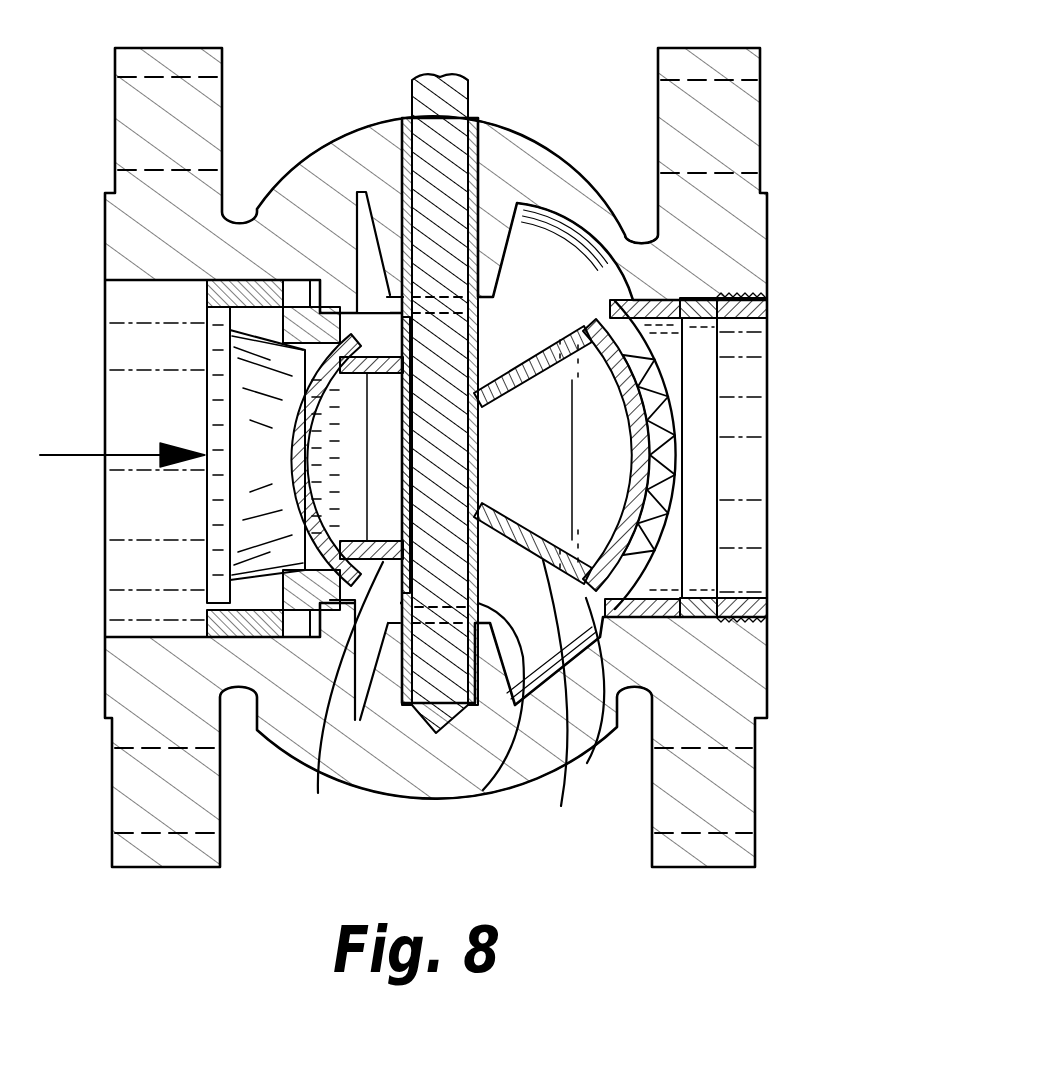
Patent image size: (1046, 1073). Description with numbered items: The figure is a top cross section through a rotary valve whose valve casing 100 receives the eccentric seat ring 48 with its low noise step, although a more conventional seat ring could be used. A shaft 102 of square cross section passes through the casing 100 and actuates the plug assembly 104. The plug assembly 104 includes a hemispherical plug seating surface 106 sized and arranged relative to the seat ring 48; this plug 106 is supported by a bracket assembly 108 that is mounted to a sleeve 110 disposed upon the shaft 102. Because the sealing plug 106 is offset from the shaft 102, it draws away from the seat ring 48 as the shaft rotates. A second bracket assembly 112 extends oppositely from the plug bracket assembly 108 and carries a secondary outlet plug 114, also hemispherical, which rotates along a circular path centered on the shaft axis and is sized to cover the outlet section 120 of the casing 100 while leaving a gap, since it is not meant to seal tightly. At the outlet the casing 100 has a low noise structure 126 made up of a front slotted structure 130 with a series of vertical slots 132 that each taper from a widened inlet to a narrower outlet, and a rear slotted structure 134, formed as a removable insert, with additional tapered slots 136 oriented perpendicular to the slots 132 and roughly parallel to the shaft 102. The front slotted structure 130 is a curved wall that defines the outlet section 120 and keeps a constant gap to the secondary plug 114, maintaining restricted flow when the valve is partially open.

The eccentric seat ring 48 is at (293, 602).
The valve casing 100 is at (549, 130).
The shaft 102 is at (450, 488).
The plug assembly 104 is at (497, 392).
The hemispherical plug seating surface 106 is at (297, 411).
The bracket assembly 108 is at (333, 703).
The sleeve 110 is at (483, 790).
The second bracket assembly 112 is at (539, 707).
The secondary outlet plug 114 is at (603, 704).
The outlet section 120 is at (603, 308).
The low noise structure 126 is at (683, 288).
The front slotted structure 130 is at (653, 574).
The vertical slots 132 is at (685, 365).
The rear slotted structure 134 is at (767, 342).
The tapered slots 136 is at (703, 380).